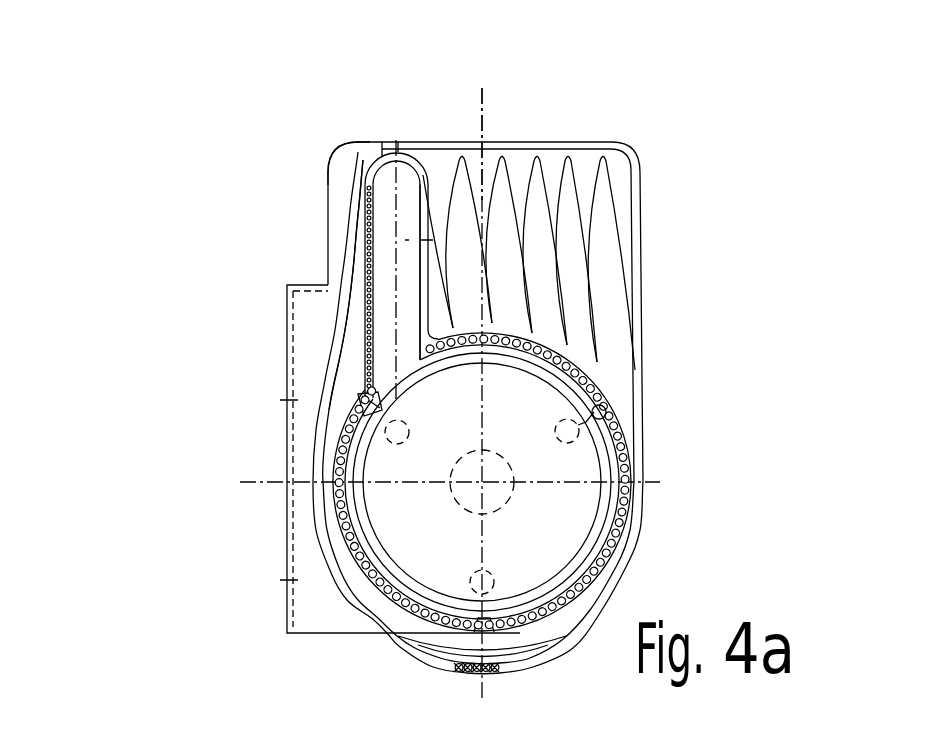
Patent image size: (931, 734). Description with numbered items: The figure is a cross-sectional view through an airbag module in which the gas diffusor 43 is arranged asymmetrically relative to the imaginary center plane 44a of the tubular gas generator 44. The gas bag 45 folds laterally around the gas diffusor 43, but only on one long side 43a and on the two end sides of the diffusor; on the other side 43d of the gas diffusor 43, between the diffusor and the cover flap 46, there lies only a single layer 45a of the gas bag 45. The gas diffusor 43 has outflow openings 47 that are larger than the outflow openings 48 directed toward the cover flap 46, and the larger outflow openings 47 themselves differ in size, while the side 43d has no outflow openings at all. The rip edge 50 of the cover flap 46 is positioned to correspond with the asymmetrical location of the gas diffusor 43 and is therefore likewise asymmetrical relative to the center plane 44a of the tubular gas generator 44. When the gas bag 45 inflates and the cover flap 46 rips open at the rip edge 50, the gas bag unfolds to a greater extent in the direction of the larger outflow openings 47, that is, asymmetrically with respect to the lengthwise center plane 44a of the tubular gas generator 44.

The gas diffusor 43 is at (330, 190).
The long side of the gas diffusor 43a is at (423, 175).
The other side of the gas diffusor 43d is at (367, 293).
The tubular gas generator 44 is at (552, 474).
The center plane of the tubular gas generator 44a is at (483, 122).
The gas bag 45 is at (603, 240).
The single layer of the gas bag 45a is at (355, 245).
The cover flap 46 is at (337, 153).
The outflow openings 47 is at (418, 263).
The outflow openings 48 is at (376, 140).
The rip edge 50 is at (404, 125).